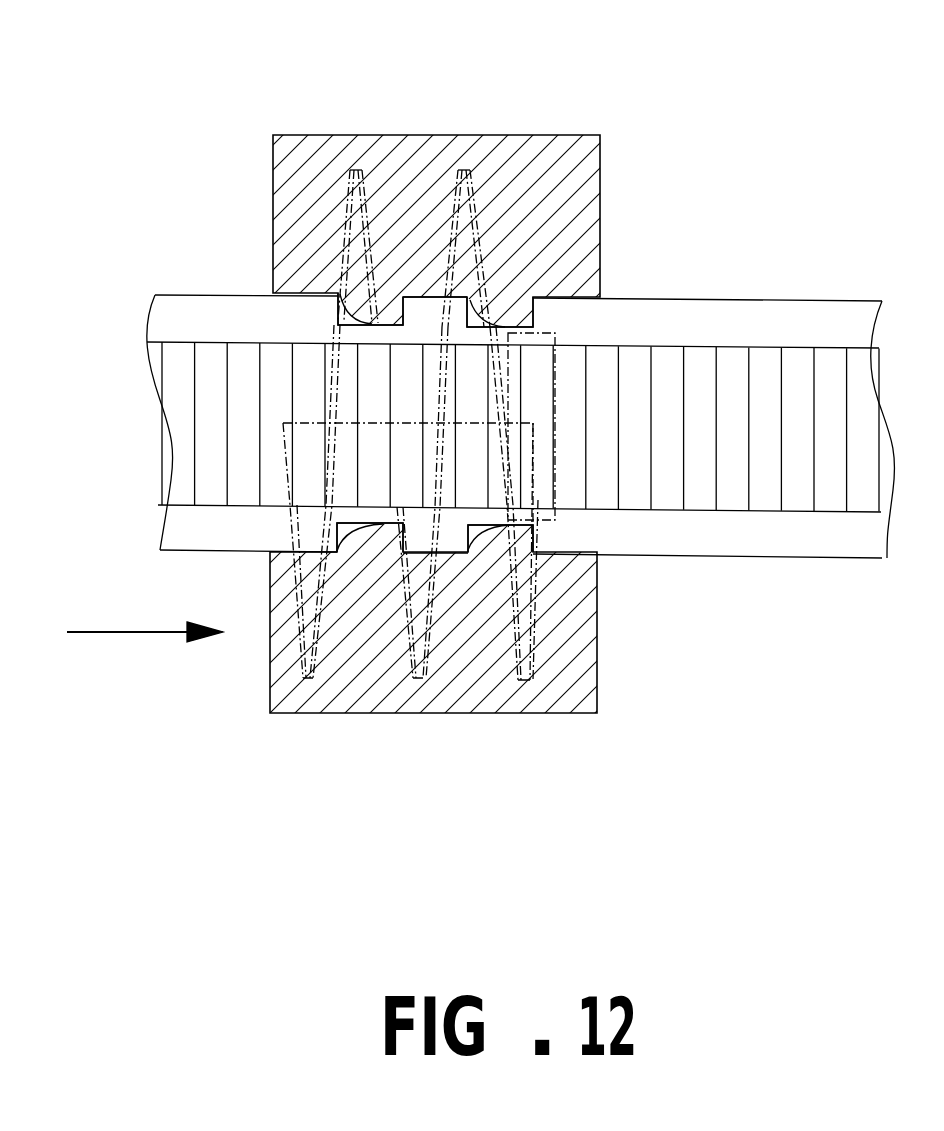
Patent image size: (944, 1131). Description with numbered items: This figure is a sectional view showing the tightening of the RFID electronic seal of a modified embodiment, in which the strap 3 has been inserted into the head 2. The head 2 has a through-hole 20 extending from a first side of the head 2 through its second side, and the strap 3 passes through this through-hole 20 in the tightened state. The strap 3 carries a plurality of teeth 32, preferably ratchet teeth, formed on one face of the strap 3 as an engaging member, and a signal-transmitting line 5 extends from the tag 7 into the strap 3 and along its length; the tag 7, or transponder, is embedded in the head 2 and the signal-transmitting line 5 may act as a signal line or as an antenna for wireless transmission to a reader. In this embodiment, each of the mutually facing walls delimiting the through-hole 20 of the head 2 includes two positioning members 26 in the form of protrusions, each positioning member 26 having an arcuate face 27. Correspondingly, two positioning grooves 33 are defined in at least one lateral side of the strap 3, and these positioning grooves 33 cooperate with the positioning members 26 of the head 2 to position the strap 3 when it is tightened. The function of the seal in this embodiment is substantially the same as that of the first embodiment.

The head 2 is at (303, 135).
The strap 3 is at (693, 298).
The signal-transmitting line 5 is at (493, 322).
The tag 7 is at (495, 398).
The through-hole 20 is at (294, 553).
The positioning member 26 is at (377, 323).
The arcuate face 27 is at (337, 302).
The teeth 32 is at (798, 385).
The positioning groove 33 is at (482, 323).